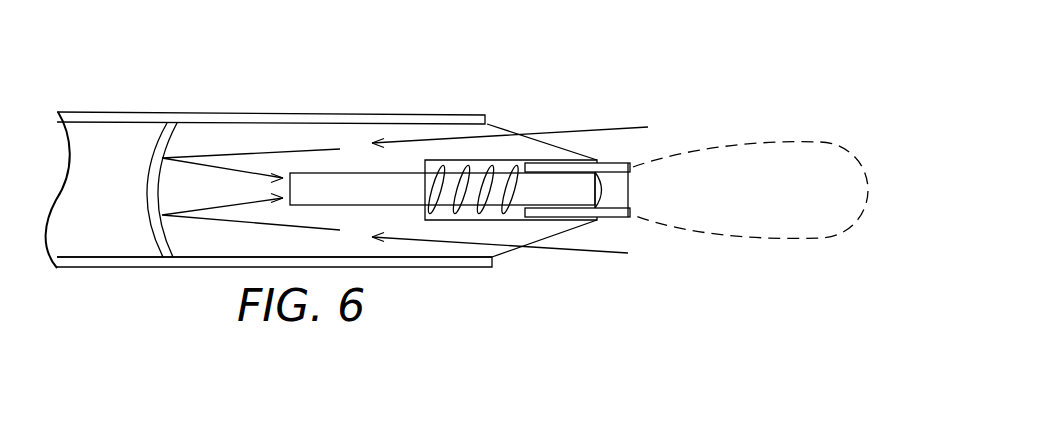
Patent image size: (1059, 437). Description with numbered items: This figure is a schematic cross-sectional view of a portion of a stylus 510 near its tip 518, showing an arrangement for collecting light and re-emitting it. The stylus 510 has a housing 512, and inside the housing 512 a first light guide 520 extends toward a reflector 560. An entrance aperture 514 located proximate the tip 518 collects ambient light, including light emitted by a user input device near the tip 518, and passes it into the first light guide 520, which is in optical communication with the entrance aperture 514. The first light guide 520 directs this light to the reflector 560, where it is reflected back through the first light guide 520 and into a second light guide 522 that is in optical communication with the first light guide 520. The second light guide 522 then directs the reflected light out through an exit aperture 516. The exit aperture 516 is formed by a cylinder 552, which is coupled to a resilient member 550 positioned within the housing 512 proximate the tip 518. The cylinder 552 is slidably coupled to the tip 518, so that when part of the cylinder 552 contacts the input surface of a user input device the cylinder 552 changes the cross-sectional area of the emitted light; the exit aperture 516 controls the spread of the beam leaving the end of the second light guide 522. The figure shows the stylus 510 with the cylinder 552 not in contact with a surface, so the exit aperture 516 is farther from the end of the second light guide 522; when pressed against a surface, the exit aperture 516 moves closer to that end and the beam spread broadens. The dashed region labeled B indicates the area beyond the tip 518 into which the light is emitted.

The stylus 510 is at (453, 89).
The housing 512 is at (275, 118).
The entrance aperture 514 is at (607, 143).
The exit aperture 516 is at (632, 188).
The tip 518 is at (545, 265).
The first light guide 520 is at (203, 243).
The second light guide 522 is at (340, 187).
The resilient member 550 is at (488, 153).
The cylinder 552 is at (609, 218).
The reflector 560 is at (160, 147).
The region B is at (786, 203).